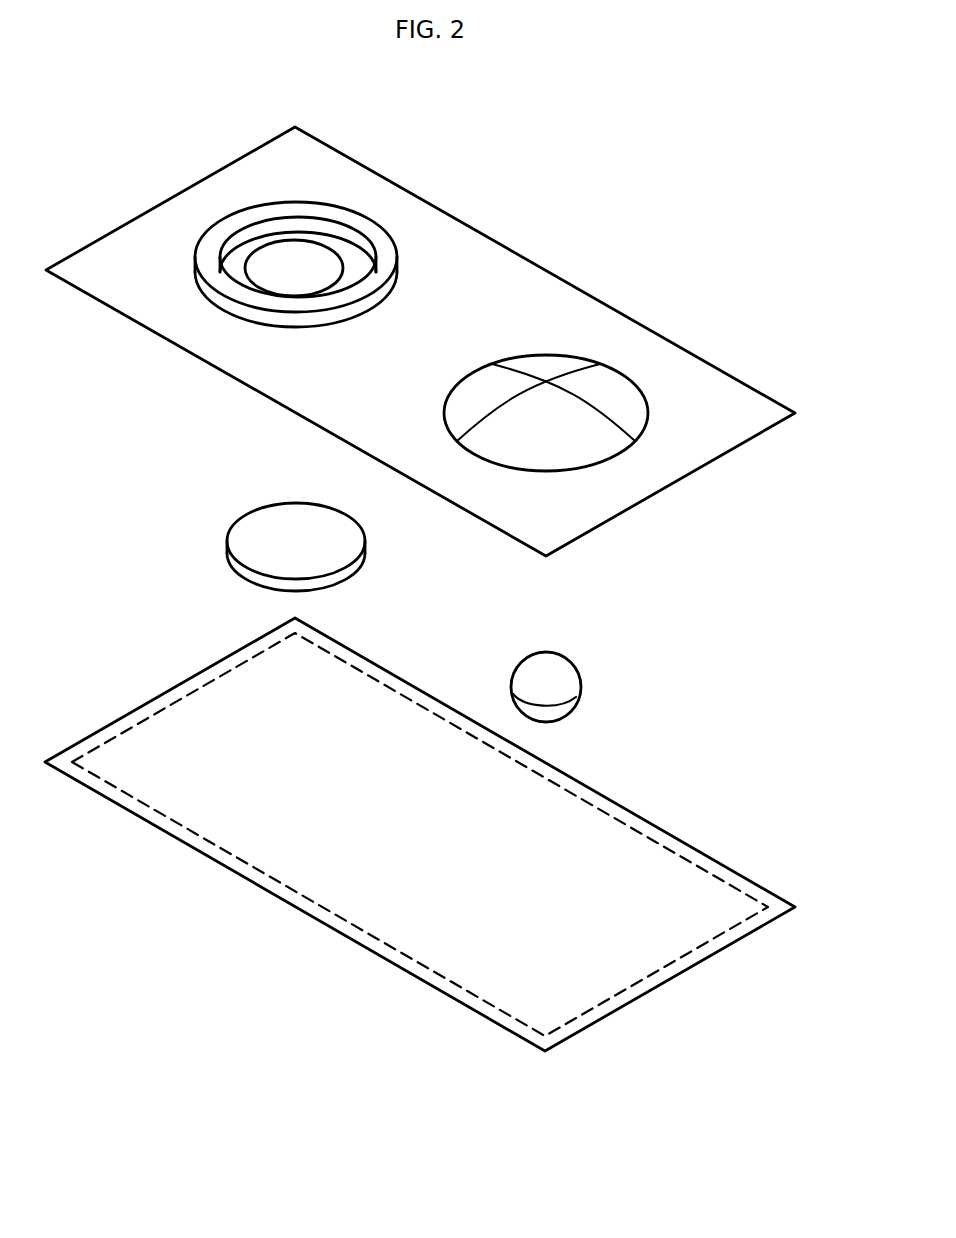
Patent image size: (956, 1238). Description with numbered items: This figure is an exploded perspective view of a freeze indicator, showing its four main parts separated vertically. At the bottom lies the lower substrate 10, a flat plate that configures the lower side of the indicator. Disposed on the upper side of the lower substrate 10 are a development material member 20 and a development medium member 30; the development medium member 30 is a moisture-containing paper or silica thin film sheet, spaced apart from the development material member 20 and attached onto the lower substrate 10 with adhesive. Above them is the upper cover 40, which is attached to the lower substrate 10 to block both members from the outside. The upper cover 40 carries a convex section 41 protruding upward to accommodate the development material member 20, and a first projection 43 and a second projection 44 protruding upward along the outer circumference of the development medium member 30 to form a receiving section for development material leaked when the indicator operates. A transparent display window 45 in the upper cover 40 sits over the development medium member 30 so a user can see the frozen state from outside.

The lower substrate 10 is at (717, 922).
The development material member 20 is at (561, 681).
The development medium member 30 is at (263, 539).
The upper cover 40 is at (713, 431).
The convex section 41 is at (548, 367).
The first projection 43 is at (372, 247).
The second projection 44 is at (397, 241).
The transparent display window 45 is at (287, 268).